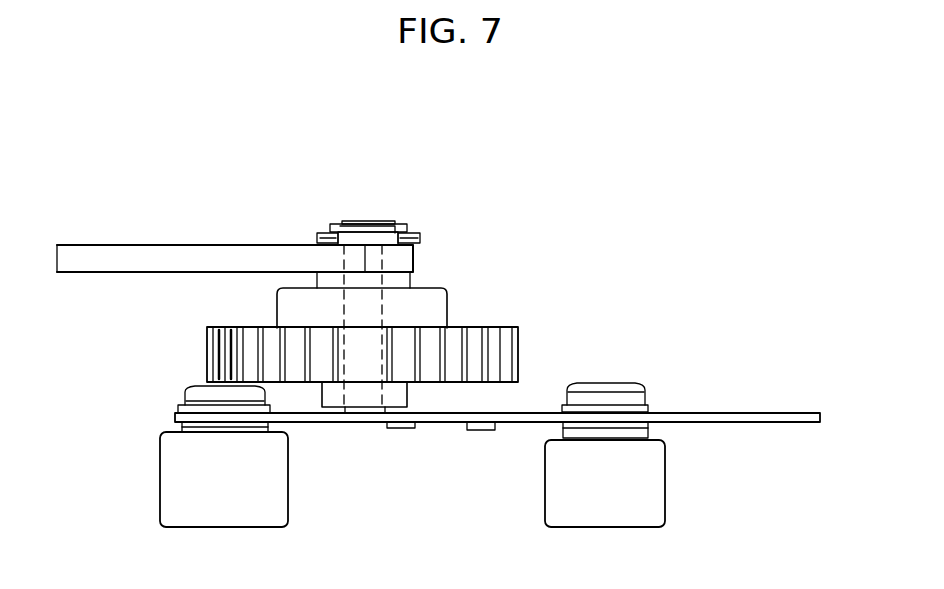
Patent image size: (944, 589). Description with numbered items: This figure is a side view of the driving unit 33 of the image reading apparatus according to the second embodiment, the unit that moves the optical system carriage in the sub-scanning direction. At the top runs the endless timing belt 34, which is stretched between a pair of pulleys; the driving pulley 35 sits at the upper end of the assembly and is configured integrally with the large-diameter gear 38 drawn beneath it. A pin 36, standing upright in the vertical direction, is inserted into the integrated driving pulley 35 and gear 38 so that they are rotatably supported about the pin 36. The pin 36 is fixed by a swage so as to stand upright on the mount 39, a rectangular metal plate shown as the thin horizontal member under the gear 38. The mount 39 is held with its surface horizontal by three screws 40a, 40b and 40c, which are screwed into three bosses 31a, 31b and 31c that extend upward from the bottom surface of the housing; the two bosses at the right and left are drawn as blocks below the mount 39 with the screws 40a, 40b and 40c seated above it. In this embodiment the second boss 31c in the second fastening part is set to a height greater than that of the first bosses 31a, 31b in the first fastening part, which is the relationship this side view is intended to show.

The driving unit 33 is at (516, 217).
The endless timing belt 34 is at (122, 275).
The driving pulley 35 is at (410, 232).
The pin 36 is at (387, 315).
The large-diameter gear 38 is at (520, 352).
The mount 39 is at (770, 413).
The screw 40a is at (666, 373).
The screw 40b is at (640, 382).
The screw 40c is at (188, 386).
The first boss 31a is at (696, 483).
The first boss 31b is at (665, 493).
The second boss 31c is at (160, 496).